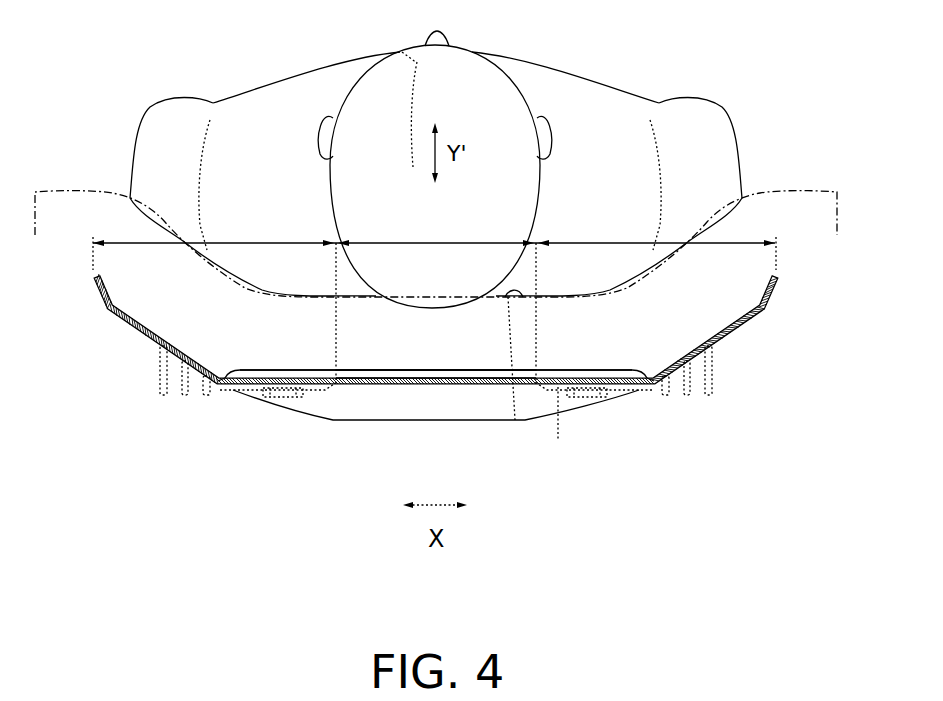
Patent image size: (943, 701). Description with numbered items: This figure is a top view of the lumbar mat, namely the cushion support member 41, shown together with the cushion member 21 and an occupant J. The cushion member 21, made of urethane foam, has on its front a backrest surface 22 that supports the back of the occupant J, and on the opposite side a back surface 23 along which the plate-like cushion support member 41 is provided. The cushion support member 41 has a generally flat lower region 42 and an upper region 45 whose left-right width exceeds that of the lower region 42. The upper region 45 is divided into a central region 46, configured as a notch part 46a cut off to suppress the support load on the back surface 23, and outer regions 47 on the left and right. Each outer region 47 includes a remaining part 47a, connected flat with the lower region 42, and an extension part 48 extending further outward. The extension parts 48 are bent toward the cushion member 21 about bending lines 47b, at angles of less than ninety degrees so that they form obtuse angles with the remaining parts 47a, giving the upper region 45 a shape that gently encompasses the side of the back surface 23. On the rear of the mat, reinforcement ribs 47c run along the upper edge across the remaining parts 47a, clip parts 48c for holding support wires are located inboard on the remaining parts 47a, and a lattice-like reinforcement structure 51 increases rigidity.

The occupant J is at (600, 74).
The cushion member 21 is at (73, 186).
The backrest surface 22 is at (515, 420).
The back surface 23 is at (558, 440).
The cushion support member 41 is at (444, 406).
The lower region 42 is at (326, 432).
The upper region 45 is at (254, 368).
The central region 46 is at (436, 300).
The notch part 46a is at (356, 375).
The outer regions 47 is at (434, 244).
The remaining parts 47a is at (284, 372).
The bending lines 47b is at (223, 380).
The reinforcement ribs 47c is at (233, 393).
The extension parts 48 is at (140, 334).
The clip parts 48c is at (283, 398).
The reinforcement structure 51 is at (165, 395).